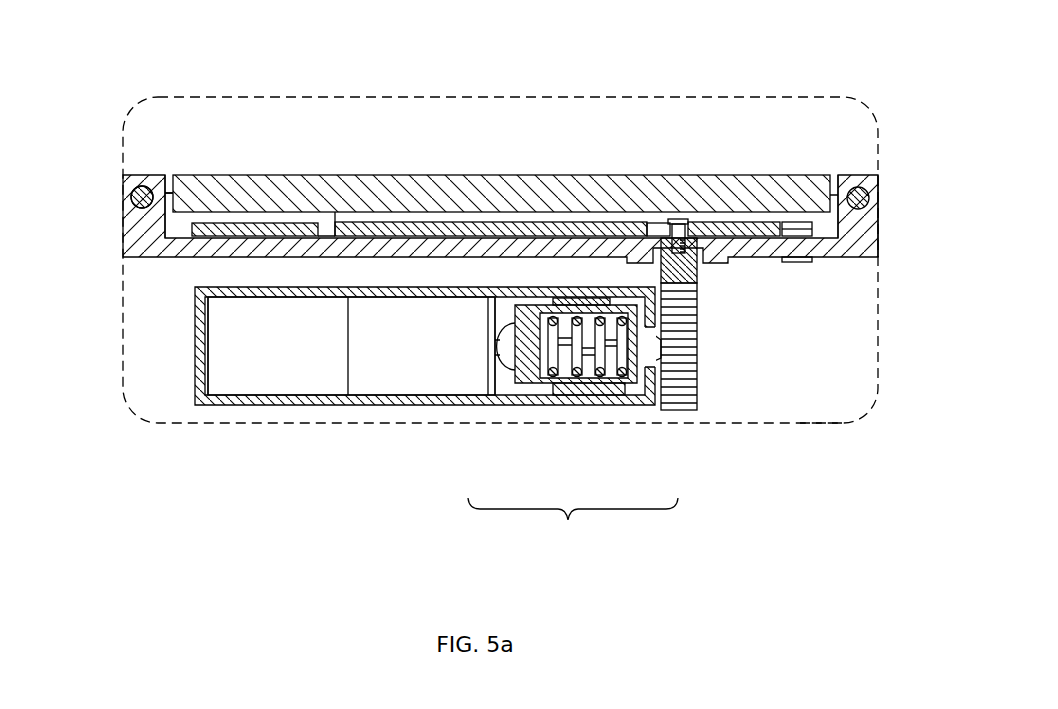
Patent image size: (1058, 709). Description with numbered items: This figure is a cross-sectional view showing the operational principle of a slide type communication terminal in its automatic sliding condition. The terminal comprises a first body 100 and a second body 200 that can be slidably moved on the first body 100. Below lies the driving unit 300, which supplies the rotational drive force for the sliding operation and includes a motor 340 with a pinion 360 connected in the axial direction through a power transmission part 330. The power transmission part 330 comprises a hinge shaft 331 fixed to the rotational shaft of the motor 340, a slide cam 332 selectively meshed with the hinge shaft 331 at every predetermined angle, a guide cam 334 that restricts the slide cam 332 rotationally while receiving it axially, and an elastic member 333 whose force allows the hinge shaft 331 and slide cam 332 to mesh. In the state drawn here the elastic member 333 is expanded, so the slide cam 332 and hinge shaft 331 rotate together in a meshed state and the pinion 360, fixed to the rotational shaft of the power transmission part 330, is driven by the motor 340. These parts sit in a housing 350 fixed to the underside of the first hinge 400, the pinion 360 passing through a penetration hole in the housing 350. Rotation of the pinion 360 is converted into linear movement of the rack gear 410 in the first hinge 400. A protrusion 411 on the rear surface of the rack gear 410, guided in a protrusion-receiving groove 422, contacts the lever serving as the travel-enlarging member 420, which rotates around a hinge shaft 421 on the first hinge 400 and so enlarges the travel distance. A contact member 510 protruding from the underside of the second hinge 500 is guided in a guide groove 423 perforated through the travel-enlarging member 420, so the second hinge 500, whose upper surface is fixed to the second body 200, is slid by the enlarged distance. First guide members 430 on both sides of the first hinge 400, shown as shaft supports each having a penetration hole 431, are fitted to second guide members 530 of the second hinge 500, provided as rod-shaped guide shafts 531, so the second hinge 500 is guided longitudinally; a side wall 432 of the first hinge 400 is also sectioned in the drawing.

The first body 100 is at (860, 412).
The second body 200 is at (850, 100).
The driving unit 300 is at (250, 405).
The power transmission part 330 is at (573, 527).
The hinge shaft 331 is at (507, 365).
The slide cam 332 is at (525, 373).
The elastic member 333 is at (597, 385).
The guide cam 334 is at (640, 383).
The motor 340 is at (317, 370).
The housing 350 is at (410, 400).
The pinion 360 is at (697, 368).
The first hinge 400 is at (153, 257).
The rack gear 410 is at (690, 270).
The protrusion 411 is at (680, 222).
The travel-enlarging member 420 is at (520, 230).
The hinge shaft 421 is at (812, 237).
The protrusion-receiving groove 422 is at (655, 230).
The guide groove 423 is at (260, 232).
The first guide member 430 is at (865, 223).
The penetration hole 431 is at (131, 201).
The side wall 432 is at (135, 233).
The second hinge 500 is at (432, 175).
The contact member 510 is at (330, 218).
The second guide member 530 is at (146, 186).
The guide shaft 531 is at (858, 198).